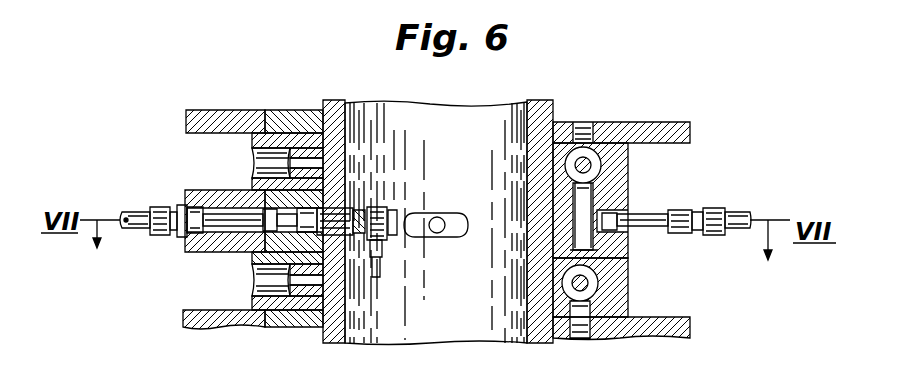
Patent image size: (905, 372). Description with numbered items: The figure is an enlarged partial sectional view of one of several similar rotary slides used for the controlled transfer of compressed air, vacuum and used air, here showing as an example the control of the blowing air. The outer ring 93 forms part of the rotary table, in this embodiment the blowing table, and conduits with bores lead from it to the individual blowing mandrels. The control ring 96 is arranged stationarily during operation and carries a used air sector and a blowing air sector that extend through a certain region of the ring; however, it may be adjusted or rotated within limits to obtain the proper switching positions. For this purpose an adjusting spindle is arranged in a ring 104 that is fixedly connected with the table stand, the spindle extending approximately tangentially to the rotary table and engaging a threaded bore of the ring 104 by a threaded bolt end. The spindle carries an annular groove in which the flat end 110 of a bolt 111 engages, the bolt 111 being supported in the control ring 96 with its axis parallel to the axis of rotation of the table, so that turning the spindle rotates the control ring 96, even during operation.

The outer ring 93 is at (230, 243).
The control ring 96 is at (262, 192).
The stationary ring 104 is at (612, 302).
The flat end 110 is at (600, 178).
The bolt 111 is at (597, 242).